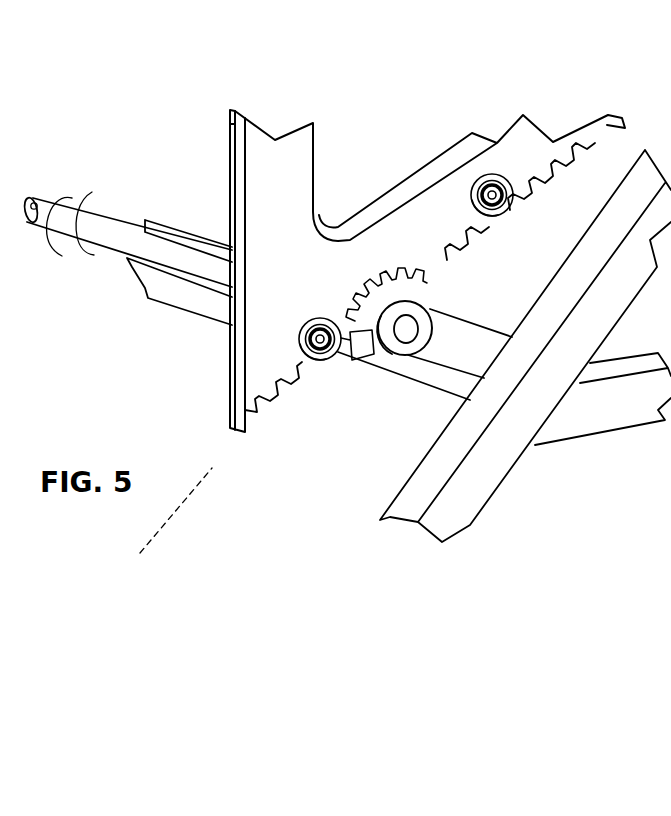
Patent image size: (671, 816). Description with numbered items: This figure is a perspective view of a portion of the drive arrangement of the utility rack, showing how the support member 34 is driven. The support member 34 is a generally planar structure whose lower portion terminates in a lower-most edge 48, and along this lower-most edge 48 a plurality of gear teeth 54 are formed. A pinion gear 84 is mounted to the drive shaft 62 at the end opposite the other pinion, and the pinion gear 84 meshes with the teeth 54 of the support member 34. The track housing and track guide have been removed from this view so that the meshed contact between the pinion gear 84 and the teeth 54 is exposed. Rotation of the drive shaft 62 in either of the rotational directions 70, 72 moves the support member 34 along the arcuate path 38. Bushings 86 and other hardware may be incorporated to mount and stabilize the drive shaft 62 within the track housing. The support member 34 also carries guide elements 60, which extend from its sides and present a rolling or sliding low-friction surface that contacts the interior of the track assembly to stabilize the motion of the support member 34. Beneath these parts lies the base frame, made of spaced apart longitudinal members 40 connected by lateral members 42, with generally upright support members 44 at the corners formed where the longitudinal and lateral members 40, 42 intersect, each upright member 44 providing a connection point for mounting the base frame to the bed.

The support member 34 is at (338, 111).
The arcuate path 38 is at (177, 512).
The longitudinal members 40 is at (176, 296).
The lateral members 42 is at (632, 415).
The upright support members 44 is at (495, 476).
The lower-most edge 48 is at (245, 432).
The gear teeth 54 is at (280, 390).
The guide elements 60 is at (478, 185).
The drive shaft 62 is at (108, 242).
The rotational direction 70 is at (73, 197).
The rotational direction 72 is at (90, 200).
The pinion gear 84 is at (362, 362).
The bushings 86 is at (407, 352).